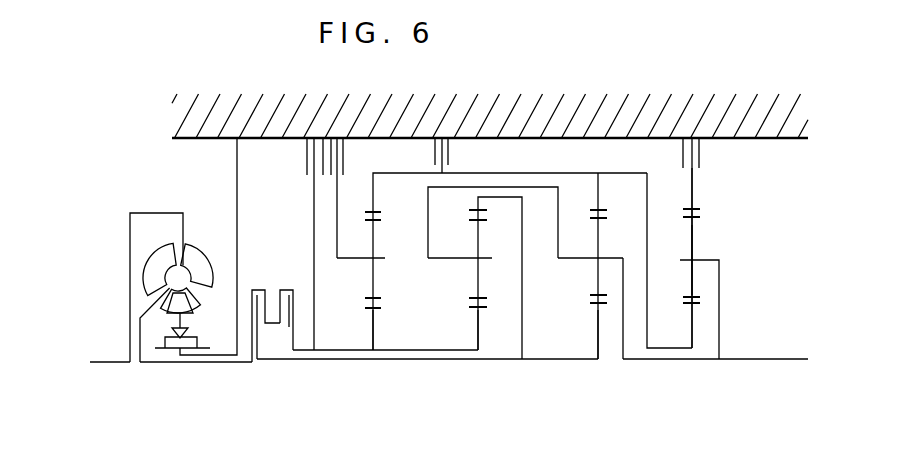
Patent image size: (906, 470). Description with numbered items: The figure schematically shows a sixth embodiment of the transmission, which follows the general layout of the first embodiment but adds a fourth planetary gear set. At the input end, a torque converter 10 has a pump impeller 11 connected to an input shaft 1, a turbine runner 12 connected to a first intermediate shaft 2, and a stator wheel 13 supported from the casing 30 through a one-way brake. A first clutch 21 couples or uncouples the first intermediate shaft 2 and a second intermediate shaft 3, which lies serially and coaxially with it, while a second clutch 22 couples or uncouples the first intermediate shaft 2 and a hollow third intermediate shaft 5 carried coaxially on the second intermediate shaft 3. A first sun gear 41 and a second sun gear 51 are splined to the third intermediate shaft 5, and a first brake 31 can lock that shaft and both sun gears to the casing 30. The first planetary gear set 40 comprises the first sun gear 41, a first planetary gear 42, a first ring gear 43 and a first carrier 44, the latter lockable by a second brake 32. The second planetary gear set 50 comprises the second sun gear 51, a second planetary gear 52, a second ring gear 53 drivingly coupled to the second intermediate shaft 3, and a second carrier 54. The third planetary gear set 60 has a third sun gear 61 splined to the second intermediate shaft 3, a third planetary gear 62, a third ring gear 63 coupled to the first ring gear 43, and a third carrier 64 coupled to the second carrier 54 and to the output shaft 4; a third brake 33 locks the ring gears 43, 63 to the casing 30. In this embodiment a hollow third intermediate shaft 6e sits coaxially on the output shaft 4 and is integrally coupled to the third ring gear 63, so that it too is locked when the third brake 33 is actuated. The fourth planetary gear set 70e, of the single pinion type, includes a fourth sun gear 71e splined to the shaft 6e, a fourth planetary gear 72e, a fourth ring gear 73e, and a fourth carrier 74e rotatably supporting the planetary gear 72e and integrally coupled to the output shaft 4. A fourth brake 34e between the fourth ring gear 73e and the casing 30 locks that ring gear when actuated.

The input shaft 1 is at (103, 362).
The first intermediate shaft 2 is at (192, 362).
The second intermediate shaft 3 is at (277, 362).
The output shaft 4 is at (775, 360).
The third intermediate shaft 5 is at (337, 352).
The hollow third intermediate shaft 6e is at (668, 360).
The torque converter 10 is at (213, 262).
The pump impeller 11 is at (203, 285).
The turbine runner 12 is at (158, 270).
The stator wheel 13 is at (175, 307).
The first clutch 21 is at (257, 288).
The second clutch 22 is at (289, 288).
The casing 30 is at (419, 84).
The first brake 31 is at (314, 136).
The second brake 32 is at (339, 136).
The third brake 33 is at (442, 136).
The fourth brake 34e is at (690, 136).
The first planetary gear set 40 is at (371, 335).
The first sun gear 41 is at (376, 316).
The first planetary gear 42 is at (377, 277).
The first ring gear 43 is at (377, 194).
The first carrier 44 is at (348, 259).
The second planetary gear set 50 is at (476, 320).
The second sun gear 51 is at (480, 325).
The second planetary gear 52 is at (480, 278).
The second ring gear 53 is at (480, 202).
The second carrier 54 is at (448, 258).
The third planetary gear set 60 is at (596, 338).
The third sun gear 61 is at (597, 332).
The third planetary gear 62 is at (594, 278).
The third ring gear 63 is at (600, 190).
The third carrier 64 is at (575, 258).
The fourth planetary gear set 70e is at (694, 333).
The fourth sun gear 71e is at (694, 318).
The fourth planetary gear 72e is at (695, 245).
The fourth ring gear 73e is at (695, 183).
The fourth carrier 74e is at (721, 260).